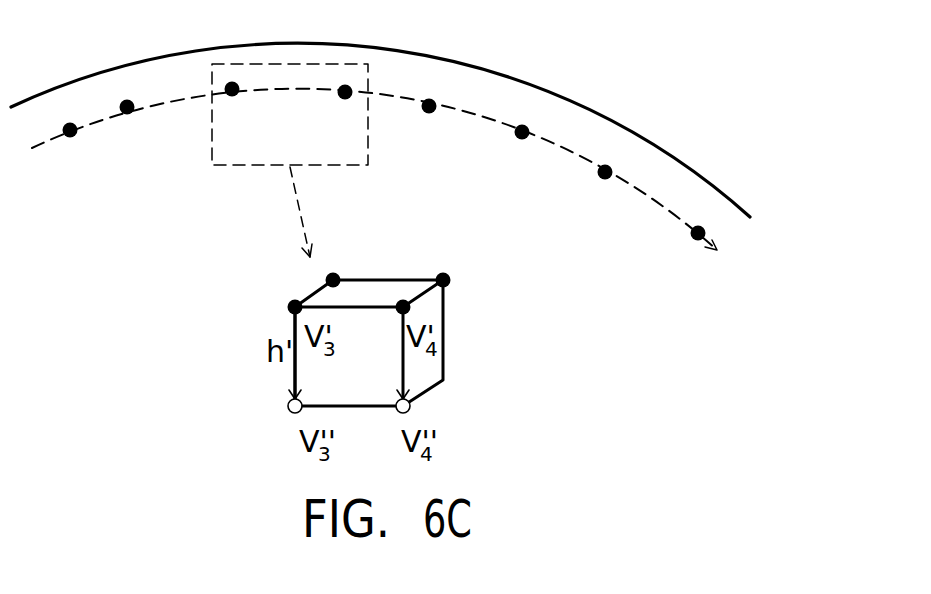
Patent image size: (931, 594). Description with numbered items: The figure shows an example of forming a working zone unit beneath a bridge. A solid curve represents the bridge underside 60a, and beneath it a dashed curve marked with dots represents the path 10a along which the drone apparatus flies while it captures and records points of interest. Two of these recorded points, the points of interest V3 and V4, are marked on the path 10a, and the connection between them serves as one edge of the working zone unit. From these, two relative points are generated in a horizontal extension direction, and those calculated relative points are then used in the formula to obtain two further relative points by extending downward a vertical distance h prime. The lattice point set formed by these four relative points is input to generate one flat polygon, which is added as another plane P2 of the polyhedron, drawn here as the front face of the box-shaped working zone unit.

The bridge underside 60a is at (667, 152).
The path 10a is at (658, 203).
The plane P2 is at (366, 346).
The point of interest V3 is at (340, 258).
The point of interest V4 is at (452, 265).